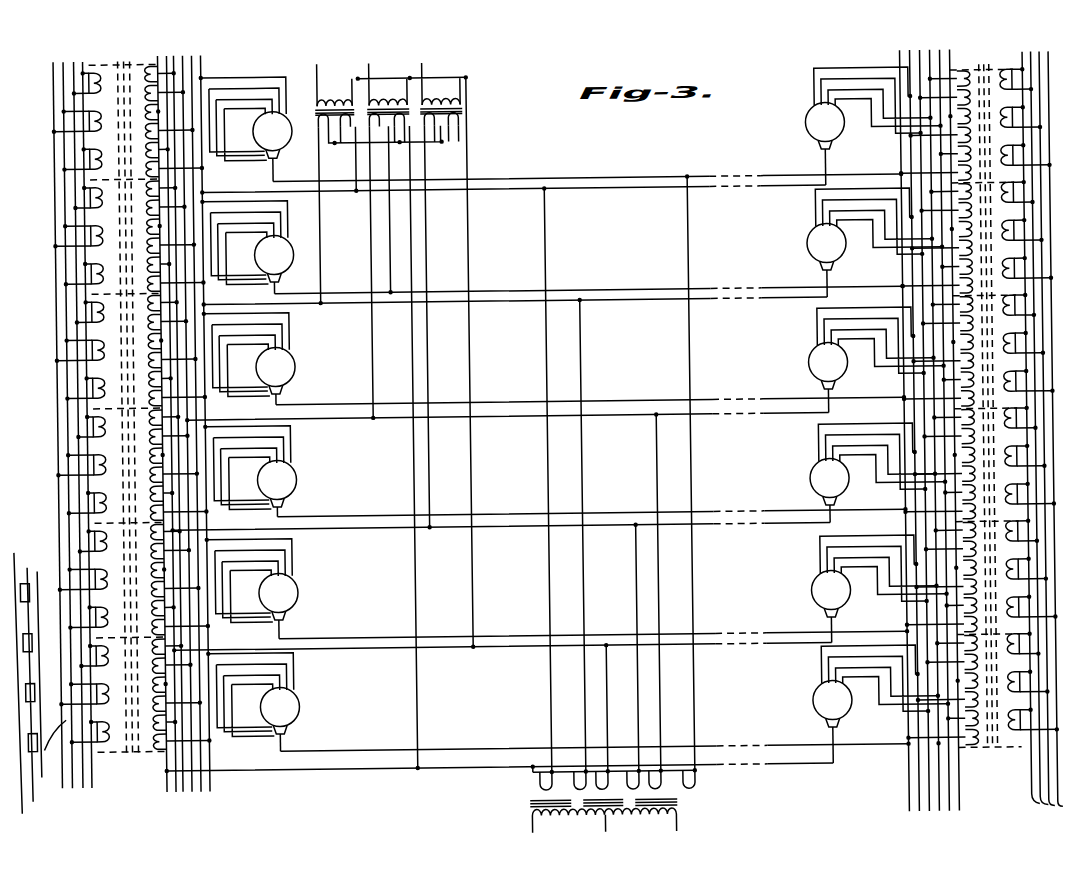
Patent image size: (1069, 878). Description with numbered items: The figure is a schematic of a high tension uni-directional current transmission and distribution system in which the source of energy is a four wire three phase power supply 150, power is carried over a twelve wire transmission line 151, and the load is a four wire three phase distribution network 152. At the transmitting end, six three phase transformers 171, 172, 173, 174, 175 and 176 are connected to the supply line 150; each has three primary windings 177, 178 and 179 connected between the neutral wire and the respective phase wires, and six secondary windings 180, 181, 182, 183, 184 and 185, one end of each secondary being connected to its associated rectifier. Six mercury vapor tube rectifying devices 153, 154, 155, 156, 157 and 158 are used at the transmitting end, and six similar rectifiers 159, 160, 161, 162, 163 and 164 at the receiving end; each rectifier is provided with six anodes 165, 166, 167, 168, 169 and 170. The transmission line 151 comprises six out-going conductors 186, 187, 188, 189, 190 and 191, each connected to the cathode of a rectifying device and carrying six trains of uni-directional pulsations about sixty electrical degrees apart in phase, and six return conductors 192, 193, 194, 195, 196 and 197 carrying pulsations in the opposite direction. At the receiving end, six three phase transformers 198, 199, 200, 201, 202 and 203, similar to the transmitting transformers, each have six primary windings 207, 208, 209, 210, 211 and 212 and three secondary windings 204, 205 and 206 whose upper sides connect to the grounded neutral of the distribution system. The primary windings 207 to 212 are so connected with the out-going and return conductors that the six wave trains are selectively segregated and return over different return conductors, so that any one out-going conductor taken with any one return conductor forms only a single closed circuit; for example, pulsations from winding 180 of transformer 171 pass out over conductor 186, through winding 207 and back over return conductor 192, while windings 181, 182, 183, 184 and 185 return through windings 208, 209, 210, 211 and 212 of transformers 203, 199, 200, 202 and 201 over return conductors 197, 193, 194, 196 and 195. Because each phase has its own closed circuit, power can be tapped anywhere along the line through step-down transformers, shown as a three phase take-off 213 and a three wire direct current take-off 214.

The four wire three phase power supply 150 is at (78, 232).
The transmission line 151 is at (640, 254).
The distribution network 152 is at (1032, 437).
The rectifying device 153 is at (284, 146).
The rectifying device 154 is at (283, 270).
The rectifying device 155 is at (286, 374).
The rectifying device 156 is at (288, 490).
The rectifying device 157 is at (288, 606).
The rectifying device 158 is at (288, 716).
The rectifier 159 is at (815, 138).
The rectifier 160 is at (815, 259).
The rectifier 161 is at (815, 376).
The rectifier 162 is at (815, 489).
The rectifier 163 is at (815, 601).
The rectifier 164 is at (815, 712).
The anode 165 is at (290, 351).
The anode 166 is at (294, 360).
The anode 167 is at (292, 367).
The anode 168 is at (264, 380).
The anode 169 is at (263, 369).
The anode 170 is at (262, 358).
The three phase transformer 171 is at (93, 100).
The three phase transformer 172 is at (58, 213).
The three phase transformer 173 is at (58, 325).
The three phase transformer 174 is at (58, 460).
The three phase transformer 175 is at (50, 561).
The three phase transformer 176 is at (50, 735).
The primary winding 177 is at (87, 72).
The primary winding 178 is at (78, 118).
The primary winding 179 is at (68, 150).
The secondary winding 180 is at (165, 72).
The secondary winding 181 is at (170, 98).
The secondary winding 182 is at (175, 108).
The secondary winding 183 is at (165, 130).
The secondary winding 184 is at (170, 152).
The secondary winding 185 is at (170, 175).
The out-going conductor 186 is at (531, 176).
The out-going conductor 187 is at (530, 292).
The out-going conductor 188 is at (528, 402).
The out-going conductor 189 is at (528, 513).
The out-going conductor 190 is at (530, 635).
The out-going conductor 191 is at (528, 750).
The return conductor 192 is at (488, 199).
The return conductor 193 is at (524, 303).
The return conductor 194 is at (490, 428).
The return conductor 195 is at (496, 538).
The return conductor 196 is at (496, 654).
The return conductor 197 is at (505, 771).
The three phase transformer 198 is at (945, 76).
The three phase transformer 199 is at (935, 262).
The three phase transformer 200 is at (960, 308).
The three phase transformer 201 is at (960, 416).
The three phase transformer 202 is at (960, 528).
The three phase transformer 203 is at (960, 643).
The secondary winding 204 is at (1005, 745).
The secondary winding 205 is at (1015, 755).
The secondary winding 206 is at (1035, 790).
The primary winding 207 is at (964, 72).
The primary winding 208 is at (968, 90).
The primary winding 209 is at (957, 118).
The primary winding 210 is at (957, 135).
The primary winding 211 is at (957, 160).
The primary winding 212 is at (957, 172).
The three phase take-off 213 is at (392, 102).
The three wire direct current take-off 214 is at (512, 828).